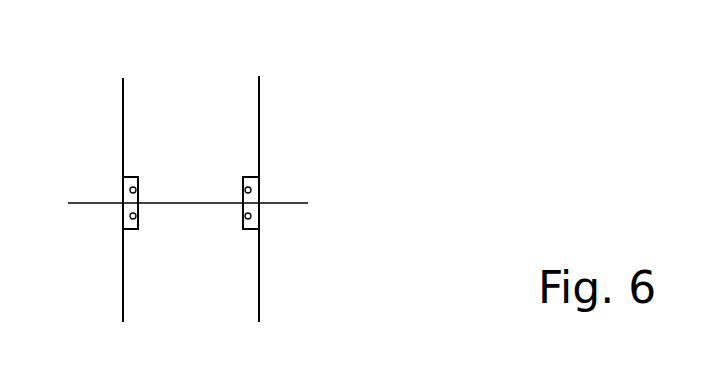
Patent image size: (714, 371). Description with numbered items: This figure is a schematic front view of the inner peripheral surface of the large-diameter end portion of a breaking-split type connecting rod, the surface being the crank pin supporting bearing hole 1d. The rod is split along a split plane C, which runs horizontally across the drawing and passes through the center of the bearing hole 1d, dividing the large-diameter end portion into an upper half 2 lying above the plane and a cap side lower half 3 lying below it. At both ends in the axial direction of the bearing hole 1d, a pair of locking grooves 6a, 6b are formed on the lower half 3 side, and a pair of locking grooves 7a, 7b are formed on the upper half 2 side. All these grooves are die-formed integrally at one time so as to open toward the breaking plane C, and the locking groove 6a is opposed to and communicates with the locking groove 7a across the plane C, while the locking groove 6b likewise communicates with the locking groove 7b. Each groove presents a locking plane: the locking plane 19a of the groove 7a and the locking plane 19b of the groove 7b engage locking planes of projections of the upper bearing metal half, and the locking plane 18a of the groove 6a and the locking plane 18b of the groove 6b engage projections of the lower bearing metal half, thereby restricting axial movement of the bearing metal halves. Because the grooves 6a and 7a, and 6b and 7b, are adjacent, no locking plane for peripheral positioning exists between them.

The crank pin supporting bearing hole 1d is at (190, 112).
The upper half 2 is at (138, 97).
The cap side half 3 is at (253, 289).
The split plane C is at (199, 204).
The locking groove 7a is at (137, 177).
The locking groove 7b is at (248, 177).
The locking plane 19a is at (137, 190).
The locking plane 19b is at (243, 190).
The locking plane 18a is at (133, 228).
The locking plane 18b is at (243, 216).
The locking groove 6a is at (133, 230).
The locking groove 6b is at (247, 230).